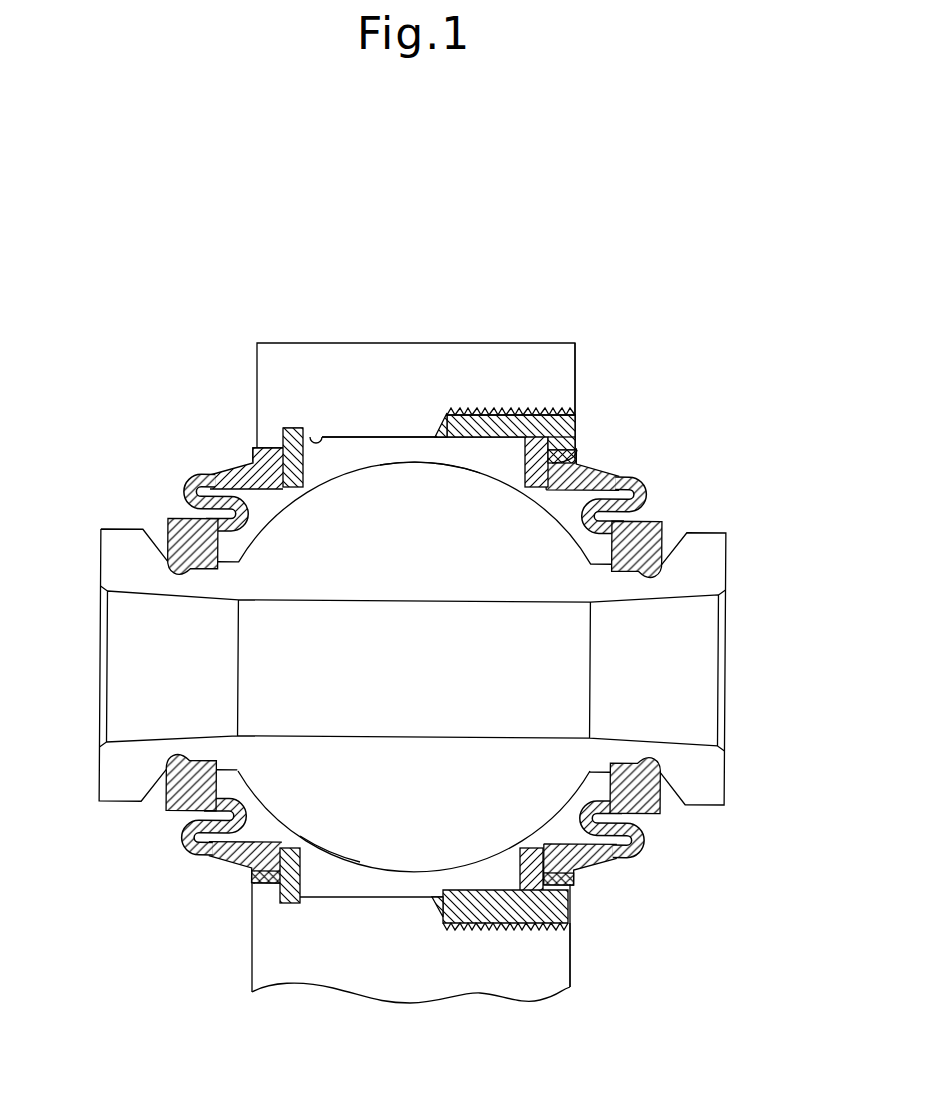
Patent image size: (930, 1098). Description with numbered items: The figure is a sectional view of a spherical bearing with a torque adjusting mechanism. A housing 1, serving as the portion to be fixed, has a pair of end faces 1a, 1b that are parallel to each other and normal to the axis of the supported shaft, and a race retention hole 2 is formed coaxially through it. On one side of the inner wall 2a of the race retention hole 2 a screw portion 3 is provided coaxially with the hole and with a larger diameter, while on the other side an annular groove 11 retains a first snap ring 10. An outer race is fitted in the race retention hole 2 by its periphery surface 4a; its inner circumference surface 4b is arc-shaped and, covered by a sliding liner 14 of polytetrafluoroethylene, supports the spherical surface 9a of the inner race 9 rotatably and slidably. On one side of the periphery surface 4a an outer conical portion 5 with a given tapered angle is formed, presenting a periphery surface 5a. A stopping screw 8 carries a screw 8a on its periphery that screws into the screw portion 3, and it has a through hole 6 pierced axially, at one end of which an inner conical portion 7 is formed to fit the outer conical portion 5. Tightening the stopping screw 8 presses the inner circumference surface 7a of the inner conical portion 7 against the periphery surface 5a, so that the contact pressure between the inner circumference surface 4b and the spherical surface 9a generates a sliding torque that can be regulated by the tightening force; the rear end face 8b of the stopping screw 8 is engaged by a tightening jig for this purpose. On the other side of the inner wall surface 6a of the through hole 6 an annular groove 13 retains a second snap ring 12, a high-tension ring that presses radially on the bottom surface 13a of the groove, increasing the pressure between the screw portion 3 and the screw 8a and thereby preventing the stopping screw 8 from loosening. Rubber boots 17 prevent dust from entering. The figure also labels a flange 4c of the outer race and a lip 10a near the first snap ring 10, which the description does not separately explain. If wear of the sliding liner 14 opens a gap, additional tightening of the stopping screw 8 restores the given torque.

The housing 1 is at (408, 338).
The end face 1a is at (575, 367).
The end face 1b is at (253, 408).
The race retention hole 2 is at (377, 447).
The inner wall 2a is at (312, 438).
The screw portion 3 is at (467, 410).
The periphery surface 4a is at (345, 438).
The inner circumference surface 4b is at (448, 468).
The seat flange 4c is at (253, 447).
The outer conical portion 5 is at (507, 925).
The periphery surface 5a is at (490, 925).
The through hole 6 is at (580, 890).
The inner wall surface 6a is at (577, 460).
The inner conical portion 7 is at (500, 885).
The inner circumference surface 7a is at (443, 915).
The stopping screw 8 is at (497, 402).
The screw 8a is at (543, 437).
The rear end face 8b is at (575, 433).
The inner race 9 is at (725, 560).
The spherical surface 9a is at (353, 870).
The first snap ring 10 is at (303, 488).
The seal ring lip 10a is at (305, 432).
The annular groove 11 is at (280, 893).
The second snap ring 12 is at (535, 492).
The annular groove 13 is at (520, 848).
The bottom surface 13a is at (553, 925).
The sliding liner 14 is at (333, 845).
The rubber boot 17 is at (178, 837).